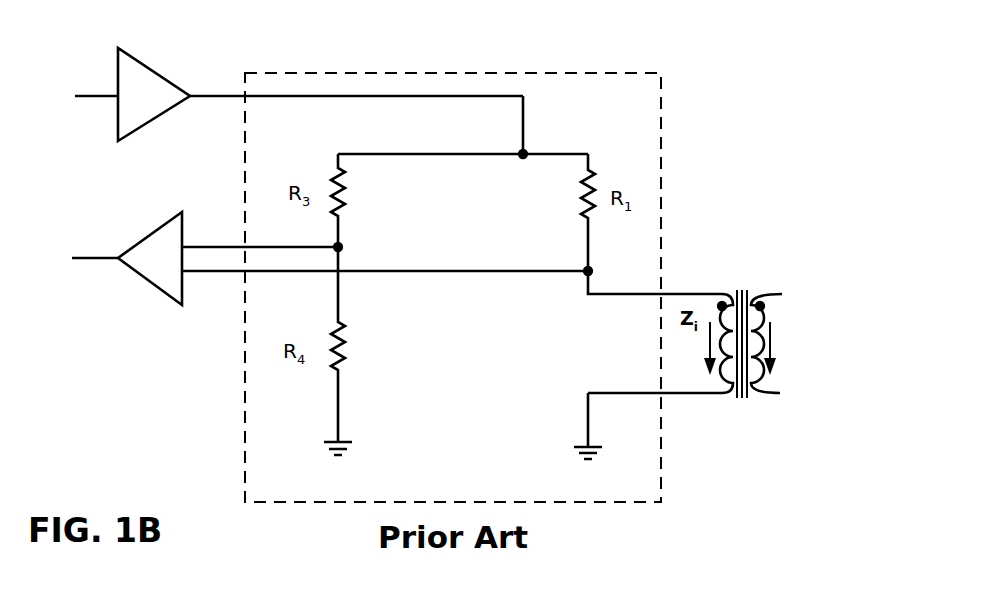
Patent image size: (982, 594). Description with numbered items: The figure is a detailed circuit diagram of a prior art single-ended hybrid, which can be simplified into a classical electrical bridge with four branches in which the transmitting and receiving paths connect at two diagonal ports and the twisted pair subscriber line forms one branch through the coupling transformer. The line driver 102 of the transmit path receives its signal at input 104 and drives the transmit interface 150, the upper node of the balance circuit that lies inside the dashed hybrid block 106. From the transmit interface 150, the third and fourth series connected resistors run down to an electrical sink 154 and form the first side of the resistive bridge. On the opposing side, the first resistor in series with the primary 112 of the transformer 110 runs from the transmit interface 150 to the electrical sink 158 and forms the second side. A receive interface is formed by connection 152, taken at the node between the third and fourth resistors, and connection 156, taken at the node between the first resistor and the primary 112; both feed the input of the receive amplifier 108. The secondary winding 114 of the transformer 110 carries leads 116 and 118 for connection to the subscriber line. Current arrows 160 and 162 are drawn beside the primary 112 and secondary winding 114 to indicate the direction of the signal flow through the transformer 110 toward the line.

The line driver 102 is at (140, 62).
The transmit input 104 is at (100, 94).
The hybrid circuit 106 is at (659, 74).
The receive amplifier 108 is at (158, 223).
The transformer 110 is at (744, 272).
The primary 112 is at (725, 397).
The secondary winding 114 is at (752, 397).
The lead 116 is at (780, 395).
The lead 118 is at (782, 294).
The transmit interface 150 is at (527, 151).
The connection 152 is at (342, 244).
The electrical sink 154 is at (345, 437).
The connection 156 is at (586, 268).
The electrical sink 158 is at (586, 428).
The current arrow 160 is at (703, 362).
The current arrow 162 is at (773, 365).